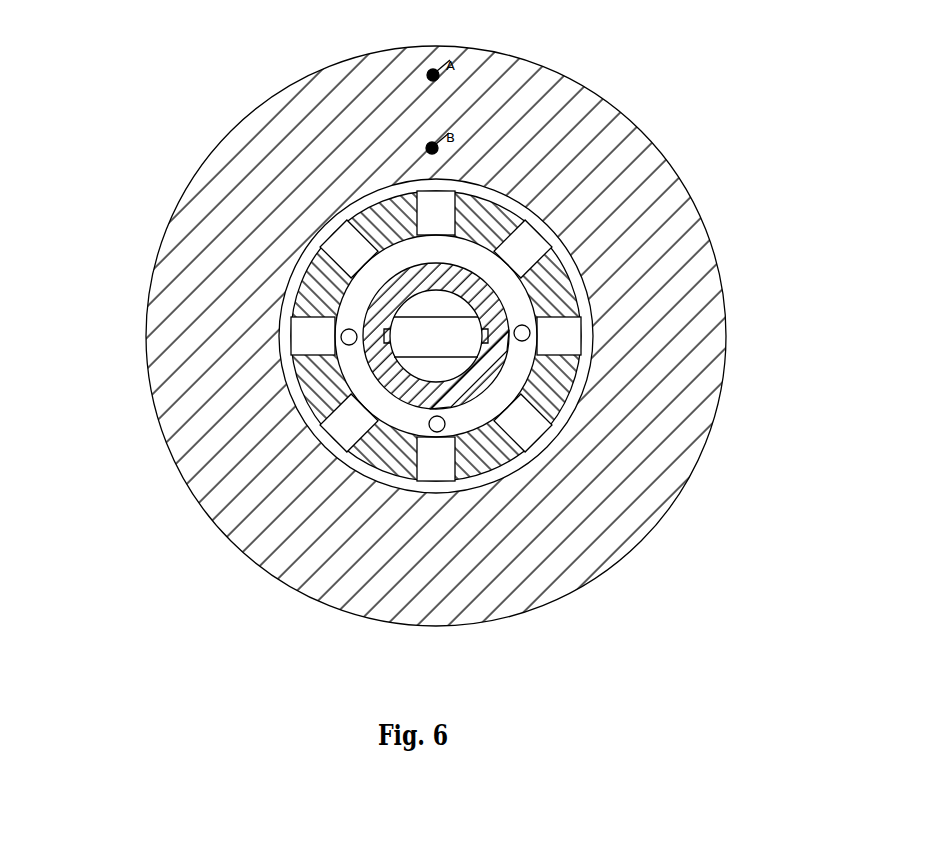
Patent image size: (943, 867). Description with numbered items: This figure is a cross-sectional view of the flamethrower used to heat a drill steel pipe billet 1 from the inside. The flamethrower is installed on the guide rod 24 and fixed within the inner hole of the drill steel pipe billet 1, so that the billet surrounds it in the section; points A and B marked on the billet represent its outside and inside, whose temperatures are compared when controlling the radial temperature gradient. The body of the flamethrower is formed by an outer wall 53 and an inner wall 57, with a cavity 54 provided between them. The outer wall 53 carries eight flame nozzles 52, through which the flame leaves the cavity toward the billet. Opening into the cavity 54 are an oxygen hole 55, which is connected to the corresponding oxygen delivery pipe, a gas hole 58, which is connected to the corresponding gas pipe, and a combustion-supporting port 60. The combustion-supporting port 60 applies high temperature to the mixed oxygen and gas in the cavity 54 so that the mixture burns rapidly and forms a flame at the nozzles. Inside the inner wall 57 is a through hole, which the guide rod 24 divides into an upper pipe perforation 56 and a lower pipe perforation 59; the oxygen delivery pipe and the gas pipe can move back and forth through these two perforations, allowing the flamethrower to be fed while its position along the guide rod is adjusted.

The drill steel pipe billet 1 is at (680, 385).
The guide rod 24 is at (430, 330).
The flame nozzle 52 is at (587, 333).
The outer wall 53 is at (573, 283).
The cavity 54 is at (517, 282).
The oxygen hole 55 is at (82, 36).
The upper pipe perforation 56 is at (82, 84).
The inner wall 57 is at (336, 333).
The gas hole 58 is at (513, 327).
The lower pipe perforation 59 is at (427, 367).
The combustion-supporting port 60 is at (428, 422).